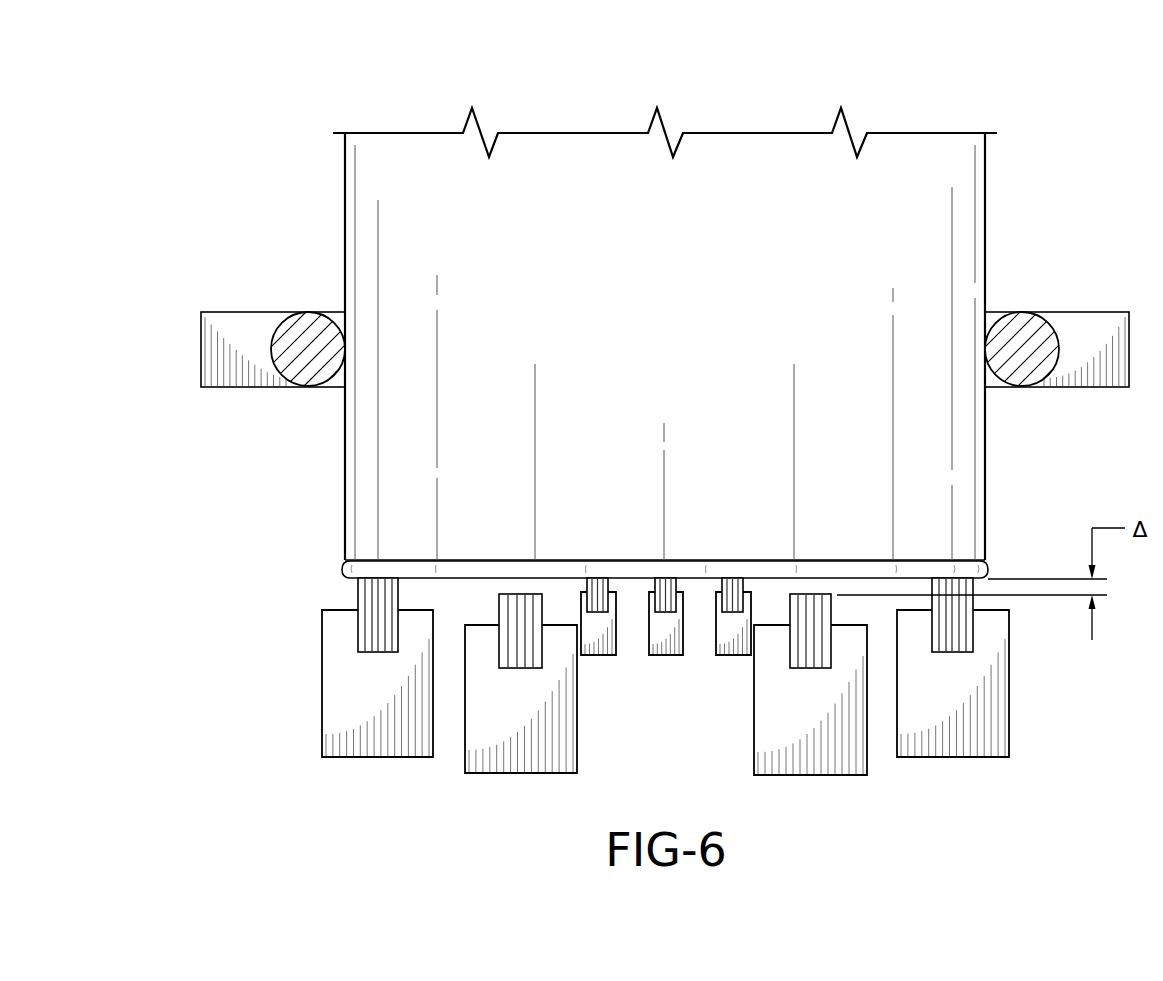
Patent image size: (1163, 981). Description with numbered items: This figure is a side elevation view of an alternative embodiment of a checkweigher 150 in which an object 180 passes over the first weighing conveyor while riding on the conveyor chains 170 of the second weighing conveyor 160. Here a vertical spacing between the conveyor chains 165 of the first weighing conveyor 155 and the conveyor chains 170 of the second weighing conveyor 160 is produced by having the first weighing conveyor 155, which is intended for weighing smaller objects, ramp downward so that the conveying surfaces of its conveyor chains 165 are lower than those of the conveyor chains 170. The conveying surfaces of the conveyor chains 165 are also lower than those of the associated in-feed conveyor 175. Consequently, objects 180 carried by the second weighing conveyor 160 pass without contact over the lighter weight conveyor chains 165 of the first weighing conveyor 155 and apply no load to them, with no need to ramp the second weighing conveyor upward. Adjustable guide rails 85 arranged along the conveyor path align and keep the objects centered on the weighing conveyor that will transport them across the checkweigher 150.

The checkweigher 150 is at (589, 329).
The objects 180 is at (572, 247).
The adjustable guide rails 85 is at (310, 335).
The conveyor chains 170 is at (378, 603).
The conveyor chains 165 is at (520, 615).
The in-feed conveyor 175 is at (663, 669).
The second weighing conveyor 160 is at (375, 771).
The first weighing conveyor 155 is at (536, 786).